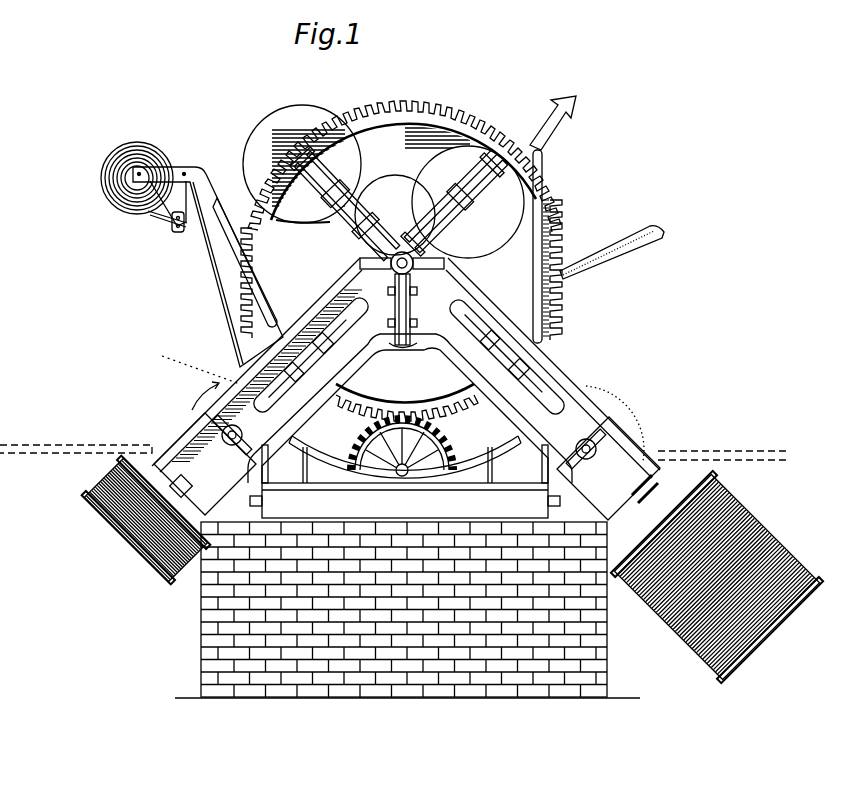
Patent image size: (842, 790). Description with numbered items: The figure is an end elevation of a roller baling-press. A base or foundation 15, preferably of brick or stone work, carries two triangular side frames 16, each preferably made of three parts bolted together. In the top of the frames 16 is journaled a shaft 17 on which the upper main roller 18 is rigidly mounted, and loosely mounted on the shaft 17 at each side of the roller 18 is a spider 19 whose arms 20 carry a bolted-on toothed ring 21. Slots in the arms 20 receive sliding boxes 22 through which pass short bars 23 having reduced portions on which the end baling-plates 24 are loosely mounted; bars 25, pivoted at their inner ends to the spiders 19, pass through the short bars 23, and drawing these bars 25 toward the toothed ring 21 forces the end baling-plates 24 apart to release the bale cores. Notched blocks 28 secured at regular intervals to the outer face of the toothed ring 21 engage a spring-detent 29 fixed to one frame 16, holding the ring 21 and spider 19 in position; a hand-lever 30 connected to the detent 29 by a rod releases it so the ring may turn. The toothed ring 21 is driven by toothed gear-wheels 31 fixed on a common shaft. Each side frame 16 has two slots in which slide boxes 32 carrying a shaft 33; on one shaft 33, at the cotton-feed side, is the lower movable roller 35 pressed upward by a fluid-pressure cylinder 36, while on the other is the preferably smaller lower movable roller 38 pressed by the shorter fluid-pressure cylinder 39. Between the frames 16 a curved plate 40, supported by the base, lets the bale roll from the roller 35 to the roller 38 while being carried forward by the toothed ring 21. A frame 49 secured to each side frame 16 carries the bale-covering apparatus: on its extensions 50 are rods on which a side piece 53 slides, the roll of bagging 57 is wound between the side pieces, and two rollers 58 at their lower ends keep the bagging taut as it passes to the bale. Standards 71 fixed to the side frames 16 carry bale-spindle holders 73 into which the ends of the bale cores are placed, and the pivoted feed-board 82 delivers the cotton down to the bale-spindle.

The base or foundation 15 is at (603, 636).
The triangular side frames 16 is at (357, 348).
The shaft 17 is at (392, 272).
The upper main roller 18 is at (403, 189).
The spider 19 is at (402, 250).
The arms 20 is at (303, 232).
The toothed ring 21 is at (466, 110).
The boxes 22 is at (337, 153).
The short bars 23 is at (463, 196).
The end baling-plates 24 is at (568, 335).
The bars 25 is at (325, 200).
The notched blocks 28 is at (356, 128).
The spring-detent 29 is at (254, 356).
The hand-lever 30 is at (156, 440).
The toothed gear-wheels 31 is at (398, 452).
The boxes 32 is at (407, 466).
The shaft 33 is at (222, 440).
The lower movable roller 35 is at (612, 400).
The fluid-pressure cylinder 36 is at (752, 530).
The lower movable roller 38 is at (200, 400).
The fluid-pressure cylinder 39 is at (118, 475).
The curved plate 40 is at (318, 458).
The frame 49 is at (210, 176).
The extensions 50 is at (173, 165).
The side piece 53 is at (168, 203).
The roll of bagging 57 is at (112, 186).
The rollers 58 is at (171, 226).
The standards 71 is at (544, 165).
The bale-spindle holders 73 is at (562, 118).
The feed-board 82 is at (582, 262).